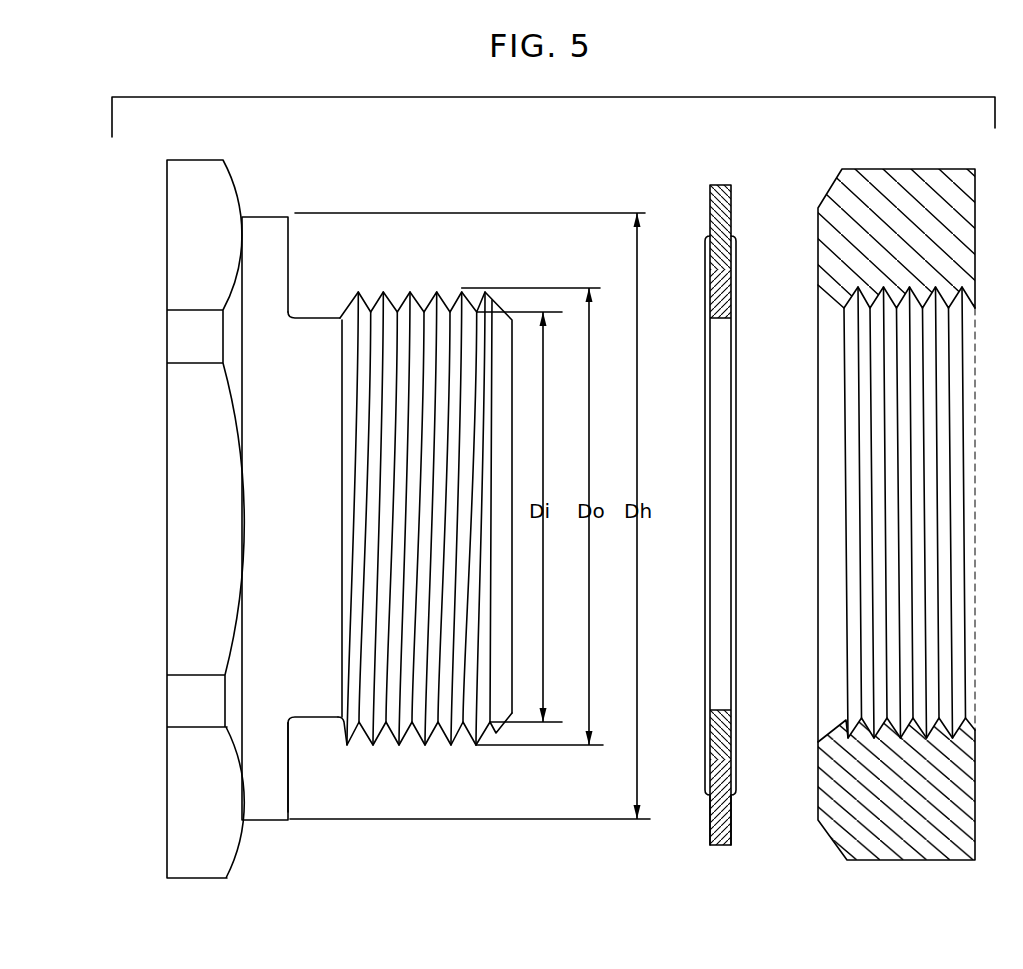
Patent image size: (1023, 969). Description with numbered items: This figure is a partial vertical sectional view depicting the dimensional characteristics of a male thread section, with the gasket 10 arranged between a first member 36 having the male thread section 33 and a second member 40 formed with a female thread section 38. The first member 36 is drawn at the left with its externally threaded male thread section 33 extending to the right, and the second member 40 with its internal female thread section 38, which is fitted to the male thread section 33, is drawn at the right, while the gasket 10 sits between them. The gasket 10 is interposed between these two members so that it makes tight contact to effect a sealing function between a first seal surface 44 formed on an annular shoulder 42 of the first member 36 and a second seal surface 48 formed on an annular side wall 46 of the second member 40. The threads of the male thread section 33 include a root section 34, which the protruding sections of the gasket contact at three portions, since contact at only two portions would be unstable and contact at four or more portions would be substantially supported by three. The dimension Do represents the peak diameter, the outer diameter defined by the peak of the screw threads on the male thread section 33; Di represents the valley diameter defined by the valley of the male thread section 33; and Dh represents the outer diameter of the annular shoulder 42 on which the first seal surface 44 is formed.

The gasket 10 is at (740, 253).
The male thread section 33 is at (414, 287).
The root section 34 is at (313, 317).
The first member 36 is at (240, 854).
The female thread section 38 is at (862, 311).
The second member 40 is at (829, 838).
The annular shoulder 42 is at (276, 813).
The first seal surface 44 is at (291, 780).
The annular side wall 46 is at (833, 230).
The second seal surface 48 is at (820, 788).